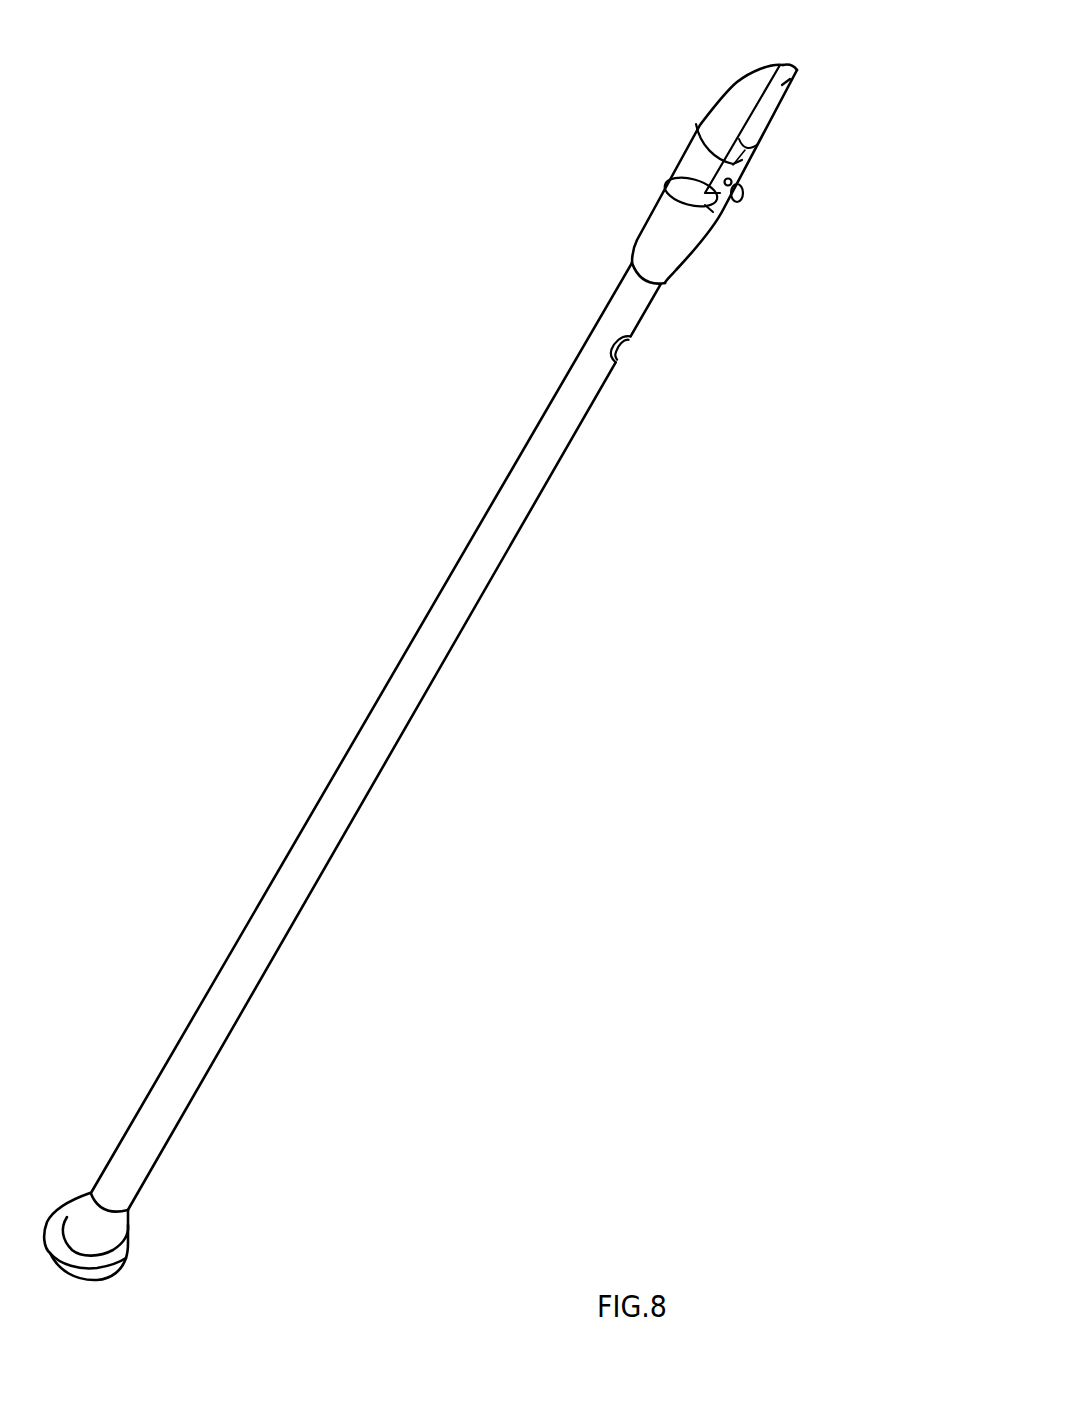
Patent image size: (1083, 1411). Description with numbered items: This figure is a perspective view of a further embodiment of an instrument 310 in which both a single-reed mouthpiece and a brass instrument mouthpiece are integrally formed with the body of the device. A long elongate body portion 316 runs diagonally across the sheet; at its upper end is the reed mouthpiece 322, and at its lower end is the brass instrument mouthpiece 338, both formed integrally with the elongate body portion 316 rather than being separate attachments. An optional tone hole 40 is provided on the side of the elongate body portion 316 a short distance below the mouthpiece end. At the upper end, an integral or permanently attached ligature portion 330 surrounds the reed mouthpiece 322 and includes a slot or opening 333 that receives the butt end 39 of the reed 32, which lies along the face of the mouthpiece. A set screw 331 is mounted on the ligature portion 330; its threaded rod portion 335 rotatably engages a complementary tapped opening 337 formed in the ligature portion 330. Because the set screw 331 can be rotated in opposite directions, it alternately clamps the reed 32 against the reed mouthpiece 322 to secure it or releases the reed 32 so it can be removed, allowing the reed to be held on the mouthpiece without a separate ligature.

The instrument 310 is at (260, 324).
The elongate body portion 316 is at (340, 843).
The brass instrument mouthpiece 338 is at (125, 1247).
The ligature portion 330 is at (715, 217).
The reed mouthpiece 322 is at (710, 112).
The reed 32 is at (797, 70).
The slot or opening 333 is at (748, 150).
The threaded rod portion 335 is at (665, 178).
The tapped opening 337 is at (734, 165).
The set screw 331 is at (745, 198).
The butt end 39 is at (713, 210).
The tone hole 40 is at (619, 356).